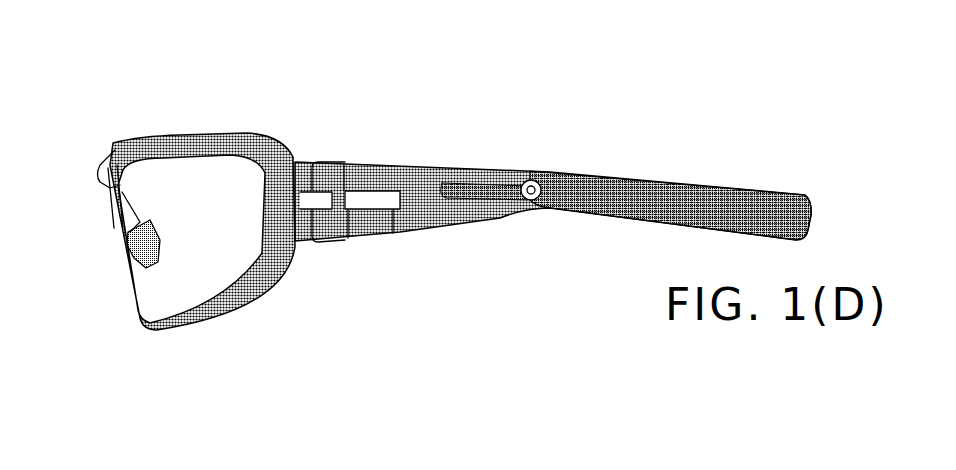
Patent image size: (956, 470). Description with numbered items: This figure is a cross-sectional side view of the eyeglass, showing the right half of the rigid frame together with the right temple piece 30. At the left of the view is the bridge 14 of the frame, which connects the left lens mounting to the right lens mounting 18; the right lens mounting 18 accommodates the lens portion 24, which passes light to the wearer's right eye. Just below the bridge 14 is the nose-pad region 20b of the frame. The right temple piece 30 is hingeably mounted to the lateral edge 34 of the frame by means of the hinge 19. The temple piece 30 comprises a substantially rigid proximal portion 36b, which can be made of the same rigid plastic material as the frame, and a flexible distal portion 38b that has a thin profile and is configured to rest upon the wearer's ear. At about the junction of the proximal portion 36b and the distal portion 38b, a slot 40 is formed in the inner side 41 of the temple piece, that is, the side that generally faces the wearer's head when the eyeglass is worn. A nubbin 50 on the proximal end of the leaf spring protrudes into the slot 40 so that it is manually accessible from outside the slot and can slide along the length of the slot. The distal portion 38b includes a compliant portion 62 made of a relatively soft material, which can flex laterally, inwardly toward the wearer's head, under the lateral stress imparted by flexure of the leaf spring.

The bridge 14 is at (103, 160).
The right lens mounting 18 is at (210, 137).
The hinge 19 is at (345, 200).
The nose-pad region 20b is at (135, 268).
The lens portion 24 is at (192, 178).
The right temple piece 30 is at (410, 160).
The lateral edge 34 is at (300, 160).
The proximal portion 36b is at (394, 228).
The distal portion 38b is at (650, 205).
The slot 40 is at (500, 220).
The inner side 41 is at (350, 229).
The nubbin 50 is at (532, 180).
The compliant portion 62 is at (720, 178).